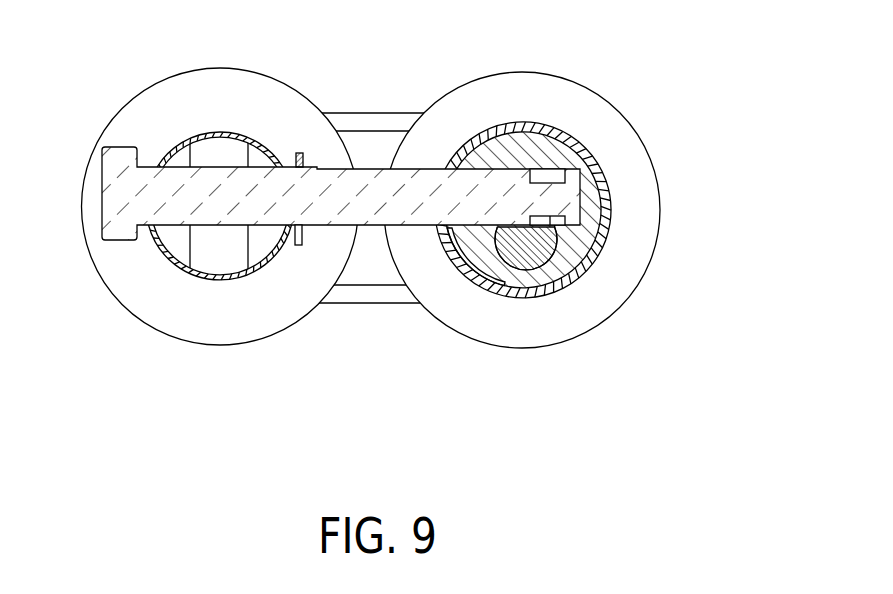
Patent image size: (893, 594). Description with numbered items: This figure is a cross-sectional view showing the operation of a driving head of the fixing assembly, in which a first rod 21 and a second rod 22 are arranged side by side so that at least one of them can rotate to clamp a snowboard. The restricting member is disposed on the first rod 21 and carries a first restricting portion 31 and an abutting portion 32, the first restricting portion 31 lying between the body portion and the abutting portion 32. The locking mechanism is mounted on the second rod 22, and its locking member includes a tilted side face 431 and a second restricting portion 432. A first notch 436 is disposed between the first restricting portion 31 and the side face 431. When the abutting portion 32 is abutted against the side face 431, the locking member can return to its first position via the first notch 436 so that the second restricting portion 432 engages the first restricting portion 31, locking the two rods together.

The first rod 21 is at (175, 95).
The second rod 22 is at (542, 93).
The first restricting portion 31 is at (578, 138).
The abutting portion 32 is at (566, 198).
The side face 431 is at (457, 243).
The second restricting portion 432 is at (566, 217).
The first notch 436 is at (596, 240).